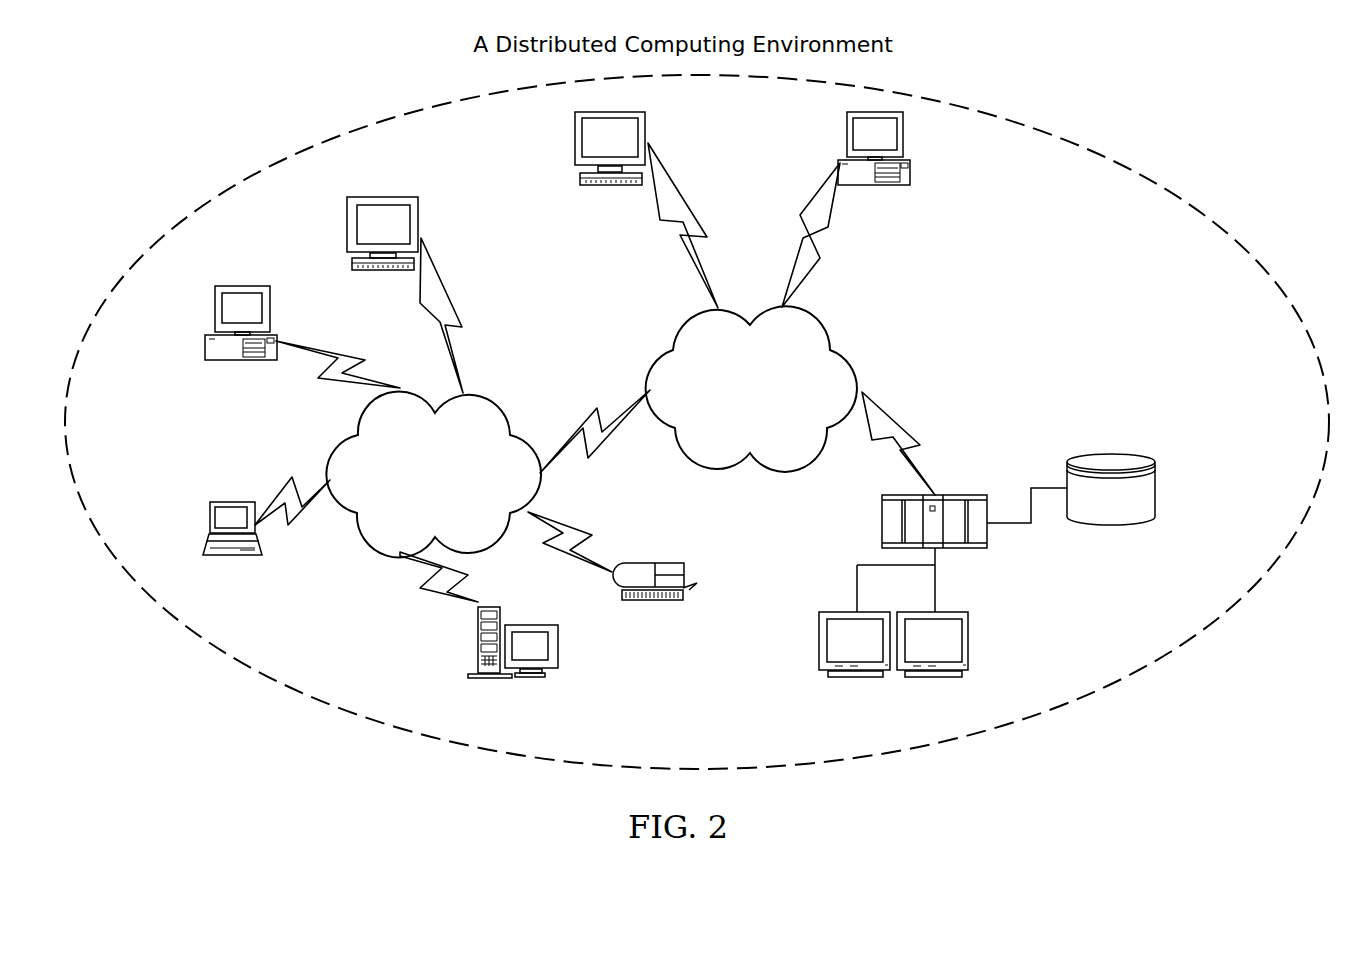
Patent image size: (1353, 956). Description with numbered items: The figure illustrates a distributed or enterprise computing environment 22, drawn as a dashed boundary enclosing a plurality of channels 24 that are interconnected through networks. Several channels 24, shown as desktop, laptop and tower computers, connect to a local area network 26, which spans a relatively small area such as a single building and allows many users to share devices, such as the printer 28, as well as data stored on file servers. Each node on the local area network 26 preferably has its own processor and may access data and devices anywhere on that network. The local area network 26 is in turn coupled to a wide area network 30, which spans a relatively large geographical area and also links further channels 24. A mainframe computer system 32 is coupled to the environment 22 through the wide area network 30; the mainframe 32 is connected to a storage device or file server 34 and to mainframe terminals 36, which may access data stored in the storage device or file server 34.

The distributed computing environment 22 is at (1048, 133).
The channel 24 is at (620, 190).
The local area network 26 is at (424, 499).
The printer 28 is at (650, 607).
The wide area network 30 is at (740, 414).
The mainframe computer system 32 is at (873, 512).
The storage device or file server 34 is at (1100, 527).
The mainframe terminal 36 is at (853, 683).